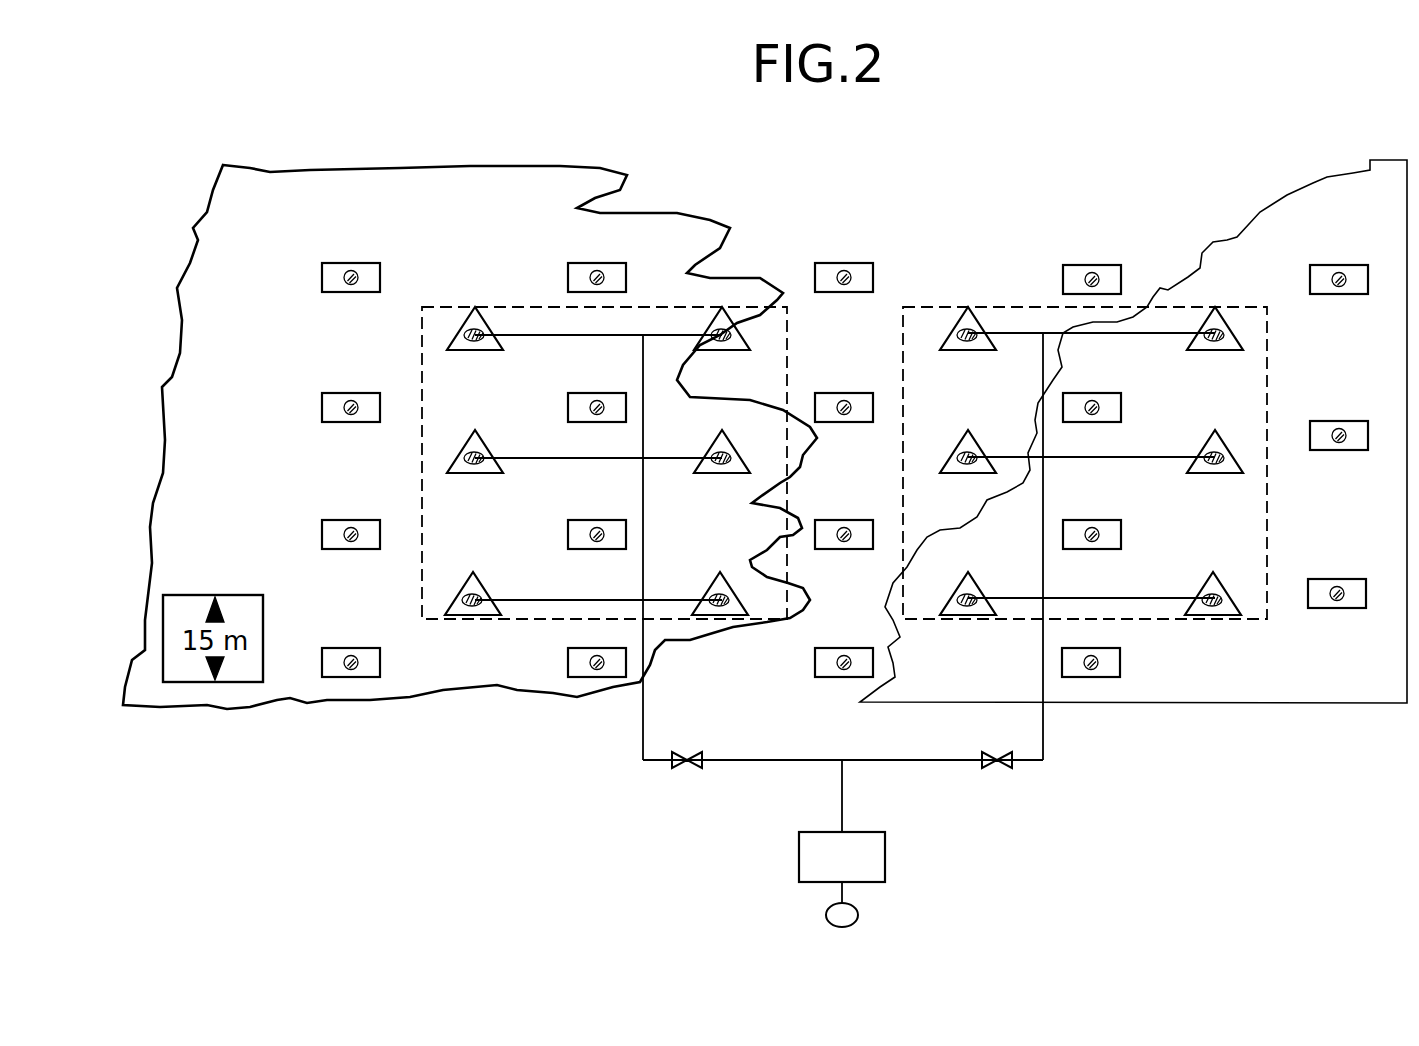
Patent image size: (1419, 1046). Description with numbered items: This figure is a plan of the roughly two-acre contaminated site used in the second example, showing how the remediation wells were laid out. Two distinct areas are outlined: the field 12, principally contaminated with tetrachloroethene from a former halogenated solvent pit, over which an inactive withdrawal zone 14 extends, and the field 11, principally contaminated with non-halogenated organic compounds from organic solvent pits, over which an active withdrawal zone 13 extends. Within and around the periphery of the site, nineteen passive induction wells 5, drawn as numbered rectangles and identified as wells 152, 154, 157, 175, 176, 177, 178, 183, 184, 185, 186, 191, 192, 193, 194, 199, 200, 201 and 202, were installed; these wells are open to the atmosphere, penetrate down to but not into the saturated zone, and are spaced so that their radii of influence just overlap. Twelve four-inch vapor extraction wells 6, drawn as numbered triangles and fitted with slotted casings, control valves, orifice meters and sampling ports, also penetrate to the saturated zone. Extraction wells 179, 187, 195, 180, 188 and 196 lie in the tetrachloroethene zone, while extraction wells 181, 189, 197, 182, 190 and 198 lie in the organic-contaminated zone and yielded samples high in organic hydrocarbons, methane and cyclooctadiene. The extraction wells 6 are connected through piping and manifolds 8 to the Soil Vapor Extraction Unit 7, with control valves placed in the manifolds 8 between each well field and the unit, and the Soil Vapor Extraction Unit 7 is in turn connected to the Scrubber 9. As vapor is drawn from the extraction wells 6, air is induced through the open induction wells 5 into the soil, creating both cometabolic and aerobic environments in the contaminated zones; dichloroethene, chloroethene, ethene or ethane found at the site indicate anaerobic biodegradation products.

The passive induction well 5 is at (872, 232).
The vapor extraction well 6 is at (852, 644).
The Soil Vapor Extraction Unit 7 is at (885, 852).
The piping and manifolds 8 is at (843, 800).
The Scrubber 9 is at (826, 913).
The field 11 is at (1278, 223).
The field 12 is at (387, 178).
The active withdrawal zone 13 is at (997, 305).
The inactive withdrawal zone 14 is at (510, 305).
The passive induction well 152 is at (1337, 580).
The passive induction well 154 is at (1339, 422).
The passive induction well 157 is at (1339, 266).
The passive induction well 175 is at (1092, 266).
The passive induction well 176 is at (844, 264).
The passive induction well 177 is at (597, 264).
The passive induction well 178 is at (351, 264).
The extraction well 179 is at (1215, 345).
The extraction well 180 is at (968, 345).
The extraction well 181 is at (722, 345).
The extraction well 182 is at (475, 345).
The passive induction well 183 is at (1092, 394).
The passive induction well 184 is at (844, 394).
The passive induction well 185 is at (597, 394).
The passive induction well 186 is at (351, 394).
The extraction well 187 is at (1215, 467).
The extraction well 188 is at (968, 467).
The extraction well 189 is at (722, 467).
The extraction well 190 is at (475, 467).
The passive induction well 191 is at (1092, 521).
The passive induction well 192 is at (844, 521).
The passive induction well 193 is at (597, 521).
The passive induction well 194 is at (351, 521).
The extraction well 195 is at (1213, 580).
The extraction well 196 is at (968, 580).
The extraction well 197 is at (720, 580).
The extraction well 198 is at (473, 580).
The passive induction well 199 is at (1091, 649).
The passive induction well 200 is at (844, 649).
The passive induction well 201 is at (597, 649).
The passive induction well 202 is at (351, 649).